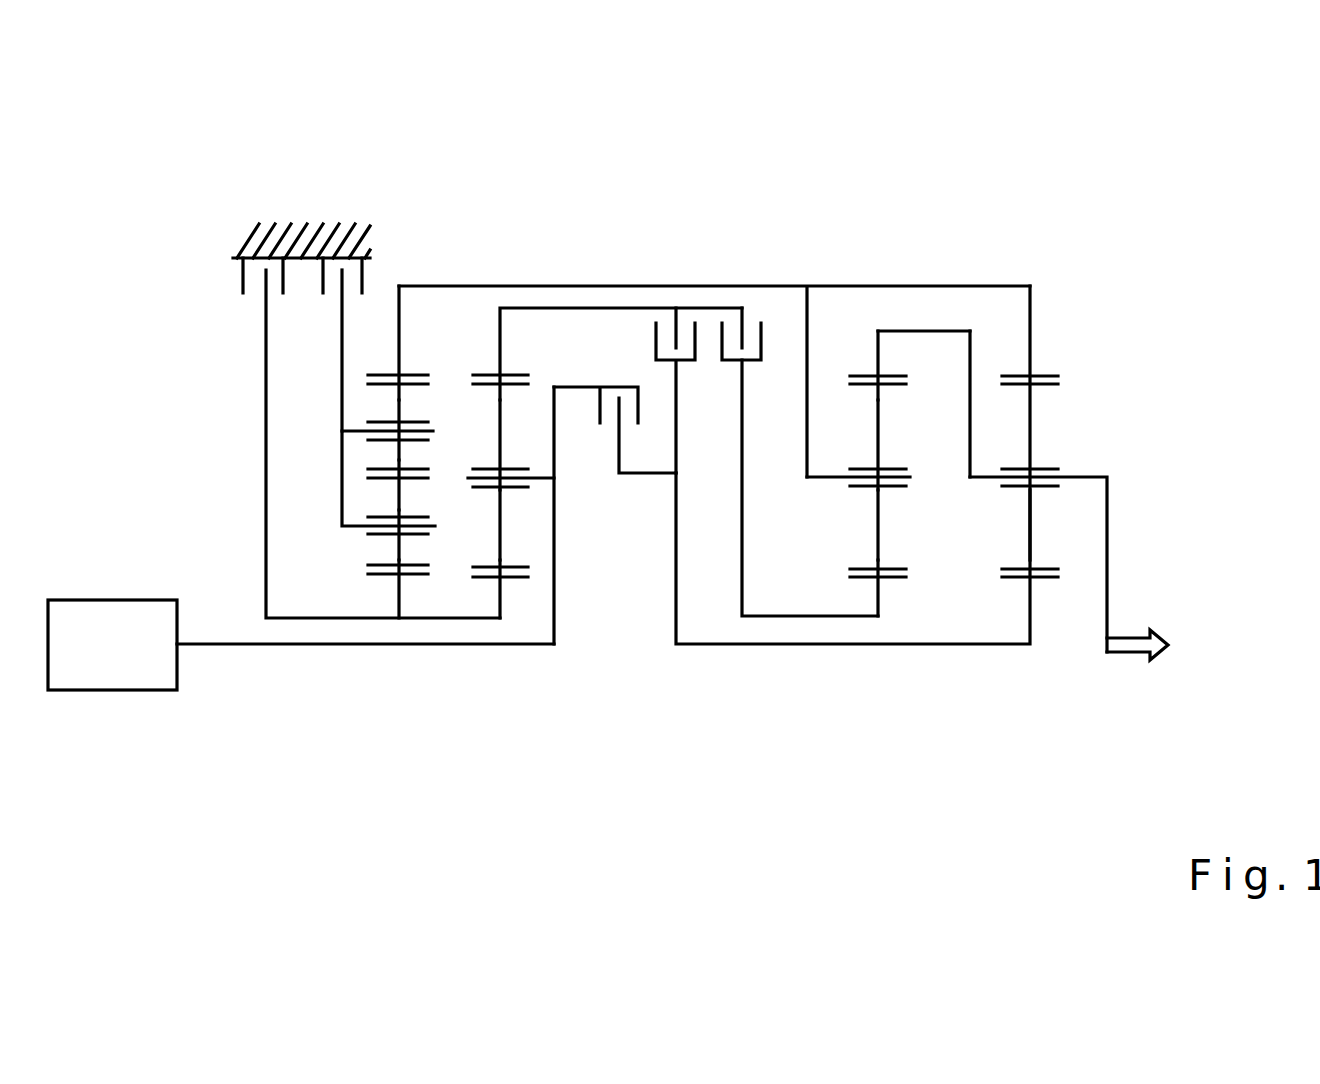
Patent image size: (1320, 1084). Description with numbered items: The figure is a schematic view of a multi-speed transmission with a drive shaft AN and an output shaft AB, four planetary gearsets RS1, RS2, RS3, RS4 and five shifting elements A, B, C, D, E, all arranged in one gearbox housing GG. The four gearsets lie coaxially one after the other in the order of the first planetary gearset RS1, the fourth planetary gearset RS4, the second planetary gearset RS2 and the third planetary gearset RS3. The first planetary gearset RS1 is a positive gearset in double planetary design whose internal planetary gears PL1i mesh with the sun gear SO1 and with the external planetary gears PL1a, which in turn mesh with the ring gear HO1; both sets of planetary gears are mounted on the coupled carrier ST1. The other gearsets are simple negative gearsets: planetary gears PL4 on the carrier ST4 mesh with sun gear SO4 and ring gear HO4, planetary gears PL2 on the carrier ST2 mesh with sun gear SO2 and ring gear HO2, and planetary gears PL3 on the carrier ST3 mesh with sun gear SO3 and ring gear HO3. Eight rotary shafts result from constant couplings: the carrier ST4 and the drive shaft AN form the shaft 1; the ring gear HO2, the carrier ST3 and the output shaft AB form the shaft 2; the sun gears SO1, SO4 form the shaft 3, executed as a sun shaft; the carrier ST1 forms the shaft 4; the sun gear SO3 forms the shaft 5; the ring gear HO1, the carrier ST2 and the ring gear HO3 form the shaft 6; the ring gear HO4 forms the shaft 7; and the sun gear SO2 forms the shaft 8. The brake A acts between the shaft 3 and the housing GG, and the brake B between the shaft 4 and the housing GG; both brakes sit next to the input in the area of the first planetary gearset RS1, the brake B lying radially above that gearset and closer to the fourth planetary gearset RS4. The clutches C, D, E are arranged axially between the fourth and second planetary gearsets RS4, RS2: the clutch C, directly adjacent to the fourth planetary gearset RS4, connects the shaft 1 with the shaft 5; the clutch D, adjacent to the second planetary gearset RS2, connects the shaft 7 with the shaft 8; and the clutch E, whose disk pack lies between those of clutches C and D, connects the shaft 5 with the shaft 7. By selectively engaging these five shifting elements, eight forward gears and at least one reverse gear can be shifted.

The gearbox housing GG is at (287, 235).
The brake A is at (238, 306).
The brake B is at (326, 307).
The shaft 4 is at (342, 340).
The carrier of the first planetary gearset ST1 is at (358, 527).
The shaft 3 is at (290, 617).
The ring gear of the first planetary gearset HO1 is at (398, 330).
The external planetary gears of the first planetary gearset PL1a is at (400, 403).
The first planetary gearset RS1 is at (436, 460).
The internal planetary gears of the first planetary gearset PL1i is at (400, 550).
The sun gear of the first planetary gearset SO1 is at (398, 588).
The drive shaft AN is at (195, 647).
The shaft 1 is at (556, 537).
The ring gear of the fourth planetary gearset HO4 is at (500, 345).
The planetary gears of the fourth planetary gearset PL4 is at (500, 437).
The carrier of the fourth planetary gearset ST4 is at (538, 477).
The fourth planetary gearset RS4 is at (470, 512).
The sun gear of the fourth planetary gearset SO4 is at (502, 598).
The clutch C is at (621, 368).
The shaft 6 is at (698, 286).
The shaft 7 is at (718, 307).
The clutch E is at (665, 382).
The clutch D is at (727, 375).
The shaft 8 is at (773, 617).
The shaft 5 is at (813, 645).
The carrier of the second planetary gearset ST2 is at (828, 475).
The shaft 2 is at (925, 330).
The ring gear of the second planetary gearset HO2 is at (878, 357).
The planetary gears of the second planetary gearset PL2 is at (877, 423).
The second planetary gearset RS2 is at (893, 504).
The sun gear of the second planetary gearset SO2 is at (878, 597).
The ring gear of the third planetary gearset HO3 is at (1032, 352).
The planetary gears of the third planetary gearset PL3 is at (1032, 430).
The carrier of the third planetary gearset ST3 is at (1090, 475).
The third planetary gearset RS3 is at (1017, 500).
The sun gear of the third planetary gearset SO3 is at (1032, 587).
The output shaft AB is at (1137, 653).